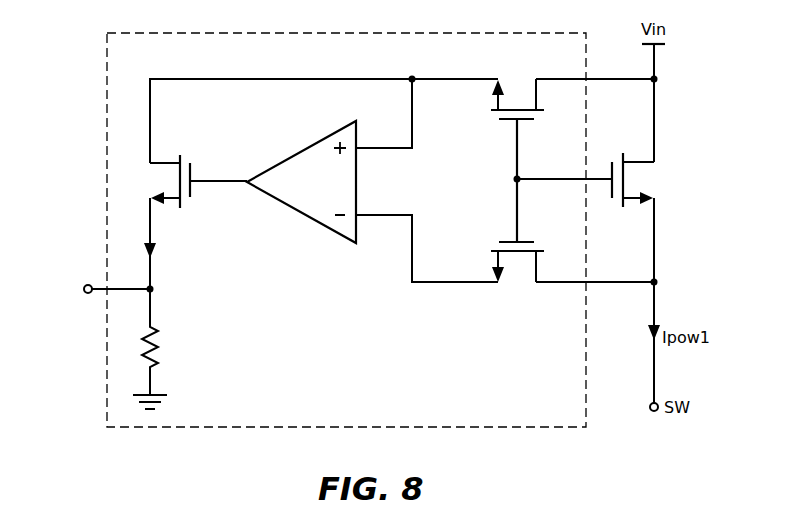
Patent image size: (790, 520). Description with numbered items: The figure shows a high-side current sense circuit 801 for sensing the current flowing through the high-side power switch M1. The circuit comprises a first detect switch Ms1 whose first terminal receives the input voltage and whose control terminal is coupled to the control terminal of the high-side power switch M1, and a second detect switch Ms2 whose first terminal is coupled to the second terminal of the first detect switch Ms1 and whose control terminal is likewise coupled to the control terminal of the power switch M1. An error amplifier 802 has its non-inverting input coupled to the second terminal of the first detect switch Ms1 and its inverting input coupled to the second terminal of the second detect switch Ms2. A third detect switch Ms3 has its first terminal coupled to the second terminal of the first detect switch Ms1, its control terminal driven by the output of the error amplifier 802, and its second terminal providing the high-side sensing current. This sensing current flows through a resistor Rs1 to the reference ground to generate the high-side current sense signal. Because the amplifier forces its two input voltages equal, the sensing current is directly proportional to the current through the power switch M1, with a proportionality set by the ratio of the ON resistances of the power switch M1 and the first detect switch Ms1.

The high-side current sense circuit 801 is at (104, 68).
The error amplifier 802 is at (312, 222).
The first detect switch Ms1 is at (517, 113).
The second detect switch Ms2 is at (517, 245).
The third detect switch Ms3 is at (182, 181).
The high-side power switch M1 is at (601, 180).
The resistor Rs1 is at (169, 342).